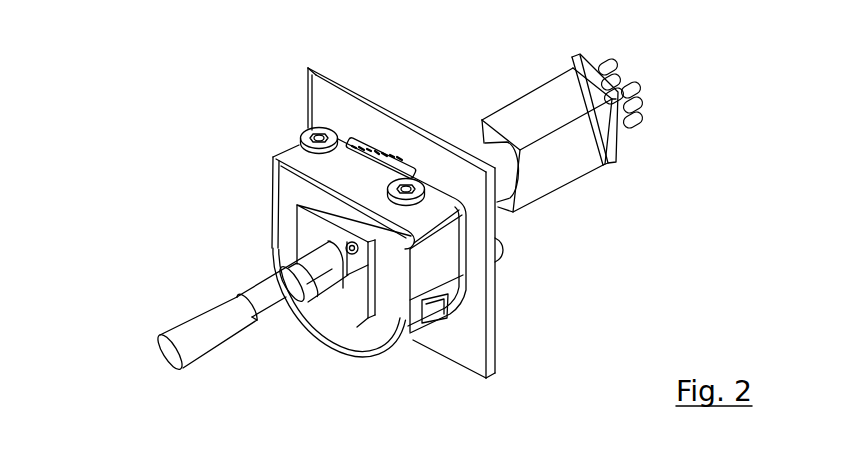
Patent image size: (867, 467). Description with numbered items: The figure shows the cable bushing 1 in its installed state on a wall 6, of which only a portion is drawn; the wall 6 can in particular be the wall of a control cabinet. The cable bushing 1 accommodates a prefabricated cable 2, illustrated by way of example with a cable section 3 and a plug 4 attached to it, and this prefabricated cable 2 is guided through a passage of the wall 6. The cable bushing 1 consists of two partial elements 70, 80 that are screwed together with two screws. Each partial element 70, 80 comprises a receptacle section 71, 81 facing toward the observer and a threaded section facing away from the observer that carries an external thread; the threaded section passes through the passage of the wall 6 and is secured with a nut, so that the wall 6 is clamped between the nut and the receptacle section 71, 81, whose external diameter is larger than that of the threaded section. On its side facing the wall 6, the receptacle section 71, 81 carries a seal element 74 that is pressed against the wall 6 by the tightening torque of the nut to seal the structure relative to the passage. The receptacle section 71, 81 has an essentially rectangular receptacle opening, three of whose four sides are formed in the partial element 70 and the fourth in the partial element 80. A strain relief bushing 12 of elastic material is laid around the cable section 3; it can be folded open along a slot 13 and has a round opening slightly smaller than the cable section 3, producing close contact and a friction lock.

The cable bushing 1 is at (375, 224).
The prefabricated cable 2 is at (195, 314).
The cable section 3 is at (305, 268).
The plug 4 is at (582, 157).
The wall 6 is at (320, 97).
The strain relief bushing 12 is at (290, 214).
The slot 13 is at (357, 276).
The partial element 70 is at (339, 343).
The receptacle section 71 is at (390, 320).
The seal element 74 is at (463, 262).
The partial element 80 is at (282, 146).
The receptacle section 81 is at (370, 172).